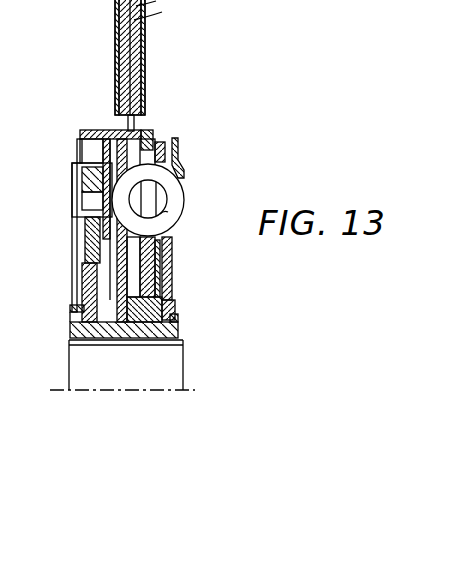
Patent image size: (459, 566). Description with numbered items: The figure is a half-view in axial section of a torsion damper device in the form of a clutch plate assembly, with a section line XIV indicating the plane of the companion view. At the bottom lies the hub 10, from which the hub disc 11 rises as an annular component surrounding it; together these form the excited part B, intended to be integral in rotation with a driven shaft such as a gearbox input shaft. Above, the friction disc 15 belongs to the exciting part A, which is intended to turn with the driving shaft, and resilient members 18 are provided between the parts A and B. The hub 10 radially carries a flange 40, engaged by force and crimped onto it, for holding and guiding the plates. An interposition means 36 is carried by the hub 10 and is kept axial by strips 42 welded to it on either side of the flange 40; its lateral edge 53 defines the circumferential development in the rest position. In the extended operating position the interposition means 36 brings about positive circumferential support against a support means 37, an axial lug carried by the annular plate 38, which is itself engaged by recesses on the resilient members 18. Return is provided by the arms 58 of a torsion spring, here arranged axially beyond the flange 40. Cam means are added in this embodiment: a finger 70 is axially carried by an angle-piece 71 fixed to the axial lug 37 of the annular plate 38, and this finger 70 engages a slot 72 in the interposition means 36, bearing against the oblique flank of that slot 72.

The hub 10 is at (181, 328).
The hub disc 11 is at (152, 253).
The friction disc 15 is at (150, 62).
The resilient members 18 is at (157, 10).
The interposition means 36 is at (80, 260).
The support means 37 is at (91, 129).
The annular plate 38 is at (146, 138).
The flange 40 is at (73, 307).
The strips 42 is at (92, 233).
The lateral edge 53 is at (66, 306).
The arms 58 is at (80, 283).
The finger 70 is at (84, 196).
The angle-piece 71 is at (88, 138).
The slot 72 is at (86, 211).
The part A is at (158, 243).
The part B is at (187, 372).
The section XIV is at (68, 377).